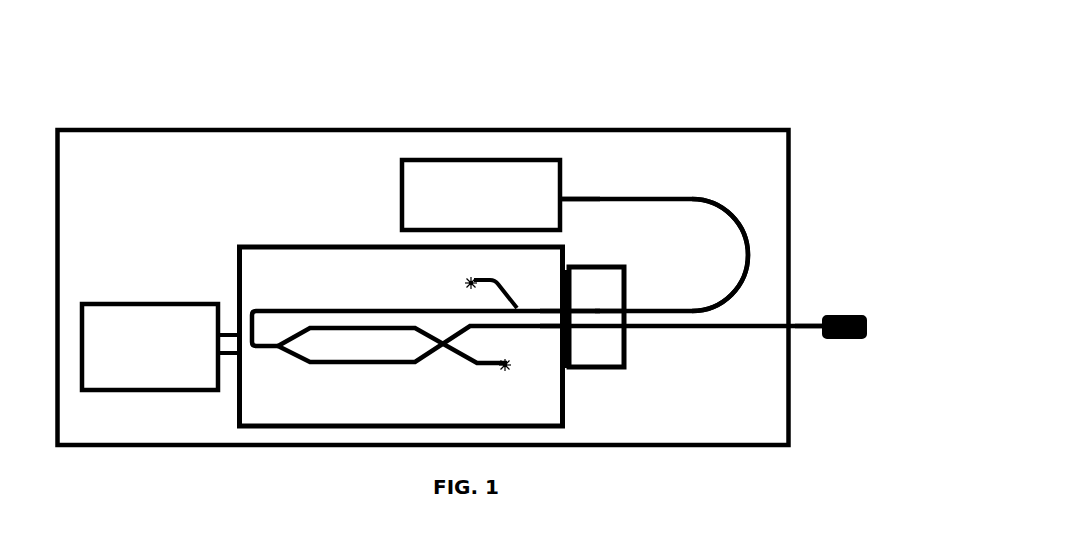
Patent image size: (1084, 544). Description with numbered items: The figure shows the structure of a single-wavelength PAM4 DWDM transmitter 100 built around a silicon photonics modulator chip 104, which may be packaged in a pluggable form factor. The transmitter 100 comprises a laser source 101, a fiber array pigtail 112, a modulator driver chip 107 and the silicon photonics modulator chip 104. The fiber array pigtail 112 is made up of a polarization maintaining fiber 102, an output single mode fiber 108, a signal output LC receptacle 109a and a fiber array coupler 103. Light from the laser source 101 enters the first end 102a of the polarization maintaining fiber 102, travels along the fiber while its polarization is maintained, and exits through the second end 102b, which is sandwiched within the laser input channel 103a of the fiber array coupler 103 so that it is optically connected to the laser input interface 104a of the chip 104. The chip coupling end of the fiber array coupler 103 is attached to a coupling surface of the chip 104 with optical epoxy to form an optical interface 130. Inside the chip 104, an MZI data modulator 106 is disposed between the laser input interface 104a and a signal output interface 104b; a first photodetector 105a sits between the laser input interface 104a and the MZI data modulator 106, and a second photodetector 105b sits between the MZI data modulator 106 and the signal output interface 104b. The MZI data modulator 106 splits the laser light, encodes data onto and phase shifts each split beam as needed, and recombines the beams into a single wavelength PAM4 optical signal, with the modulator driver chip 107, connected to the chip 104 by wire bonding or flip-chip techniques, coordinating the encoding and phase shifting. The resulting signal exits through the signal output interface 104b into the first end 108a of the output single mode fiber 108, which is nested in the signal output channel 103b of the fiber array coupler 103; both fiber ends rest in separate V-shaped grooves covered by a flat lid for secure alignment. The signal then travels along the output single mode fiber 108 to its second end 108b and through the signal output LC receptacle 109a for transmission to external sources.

The single-wavelength PAM4 transmitter 100 is at (225, 115).
The laser source 101 is at (518, 158).
The polarization maintaining fiber 102 is at (705, 196).
The first end of the polarization maintaining fiber 102a is at (565, 196).
The second end of the polarization maintaining fiber 102b is at (573, 307).
The fiber array coupler 103 is at (600, 252).
The laser input channel 103a is at (600, 307).
The signal output channel 103b is at (622, 373).
The silicon photonics modulator chip 104 is at (239, 246).
The laser input interface 104a is at (563, 310).
The signal output interface 104b is at (562, 329).
The first photodetector 105a is at (460, 278).
The second photodetector 105b is at (498, 377).
The MZI data modulator 106 is at (312, 362).
The modulator driver chip 107 is at (163, 301).
The output single mode fiber 108 is at (745, 330).
The first end of the output single mode fiber 108a is at (575, 350).
The second end of the output single mode fiber 108b is at (818, 335).
The signal output LC receptacle 109a is at (847, 312).
The fiber array pigtail 112 is at (747, 212).
The optical interface 130 is at (568, 372).